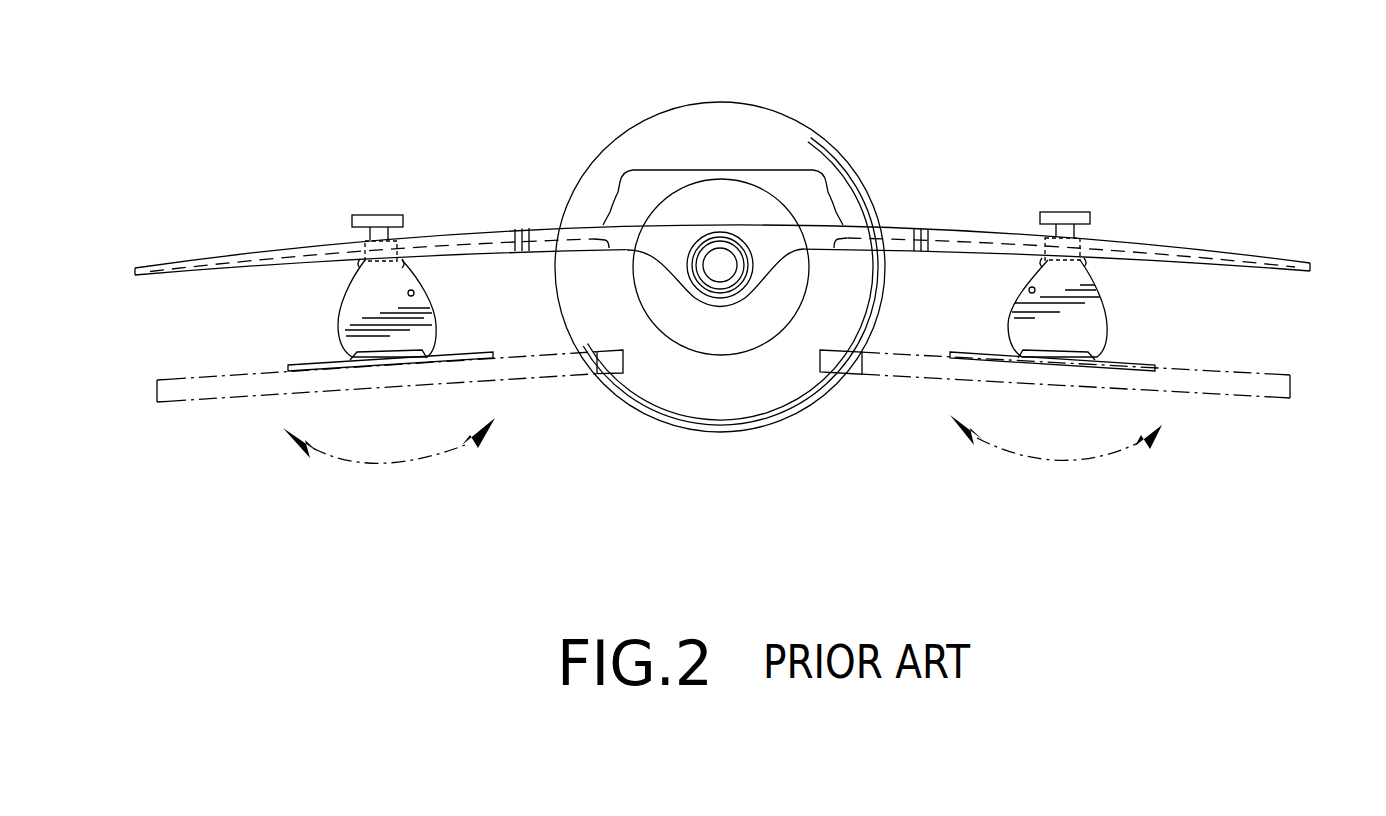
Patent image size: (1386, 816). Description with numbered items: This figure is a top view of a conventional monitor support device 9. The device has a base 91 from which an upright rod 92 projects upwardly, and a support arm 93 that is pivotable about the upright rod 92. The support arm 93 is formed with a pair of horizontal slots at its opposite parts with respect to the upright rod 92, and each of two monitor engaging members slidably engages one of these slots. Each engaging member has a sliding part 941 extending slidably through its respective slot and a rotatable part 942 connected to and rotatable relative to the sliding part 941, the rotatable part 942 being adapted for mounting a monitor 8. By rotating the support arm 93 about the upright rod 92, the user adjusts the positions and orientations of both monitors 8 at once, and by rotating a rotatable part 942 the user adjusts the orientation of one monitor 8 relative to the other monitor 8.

The conventional monitor support device 9 is at (880, 150).
The base 91 is at (768, 405).
The upright rod 92 is at (720, 263).
The support arm 93 is at (627, 240).
The sliding part 941 is at (379, 212).
The rotatable part 942 is at (360, 314).
The monitor 8 is at (222, 388).